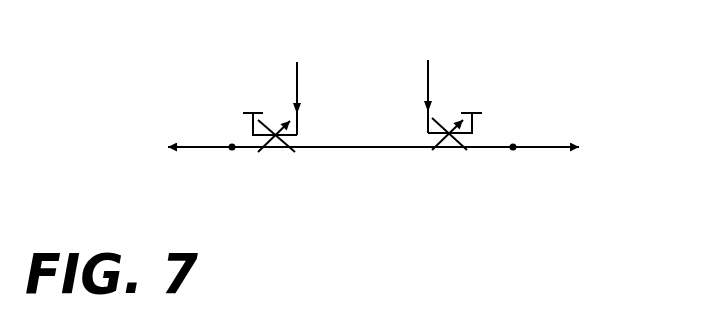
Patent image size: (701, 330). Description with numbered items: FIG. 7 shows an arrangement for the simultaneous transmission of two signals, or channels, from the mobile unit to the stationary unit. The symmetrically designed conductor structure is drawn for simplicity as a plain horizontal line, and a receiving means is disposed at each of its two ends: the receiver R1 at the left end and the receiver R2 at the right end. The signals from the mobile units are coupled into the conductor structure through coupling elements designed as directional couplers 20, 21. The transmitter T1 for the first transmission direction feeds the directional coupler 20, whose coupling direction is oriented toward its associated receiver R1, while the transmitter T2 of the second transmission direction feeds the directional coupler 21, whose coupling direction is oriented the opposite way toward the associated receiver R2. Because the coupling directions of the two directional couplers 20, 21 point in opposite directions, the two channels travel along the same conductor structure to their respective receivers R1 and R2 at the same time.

The directional coupler 20 is at (277, 153).
The directional coupler 21 is at (450, 152).
The transmitter T1 is at (295, 76).
The transmitter T2 is at (427, 76).
The receiver R1 is at (197, 171).
The receiver R2 is at (551, 172).